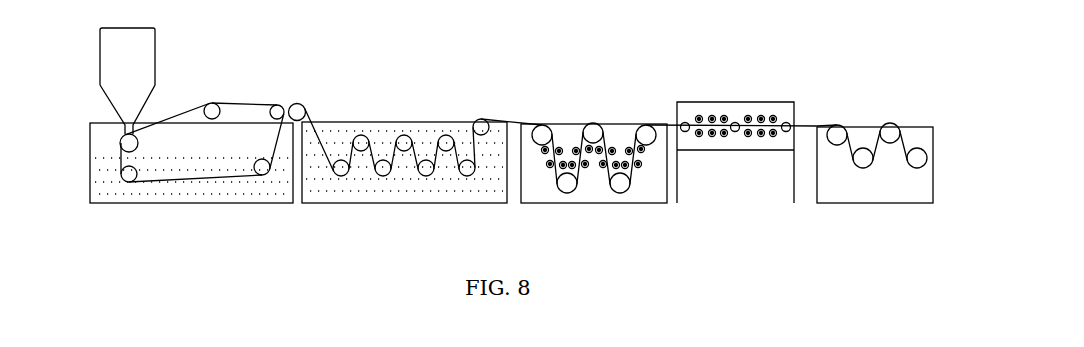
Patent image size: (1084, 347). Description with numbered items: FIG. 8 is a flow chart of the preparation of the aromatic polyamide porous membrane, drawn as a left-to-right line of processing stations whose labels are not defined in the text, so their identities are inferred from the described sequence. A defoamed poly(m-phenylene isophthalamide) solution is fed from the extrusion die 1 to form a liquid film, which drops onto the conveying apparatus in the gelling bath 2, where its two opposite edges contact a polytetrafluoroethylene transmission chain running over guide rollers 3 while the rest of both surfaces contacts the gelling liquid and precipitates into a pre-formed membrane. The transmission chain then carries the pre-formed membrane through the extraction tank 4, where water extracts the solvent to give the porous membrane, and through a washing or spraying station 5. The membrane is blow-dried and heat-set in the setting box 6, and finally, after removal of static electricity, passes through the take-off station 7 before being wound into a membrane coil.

The hopper 1 is at (123, 62).
The first bath tank with conveyor belt 2 is at (118, 157).
The guide rollers 3 is at (243, 102).
The second bath tank with guide rollers 4 is at (358, 135).
The third bath tank with spray nozzles 5 is at (570, 135).
The drying unit 6 is at (687, 113).
The fourth bath tank 7 is at (915, 133).